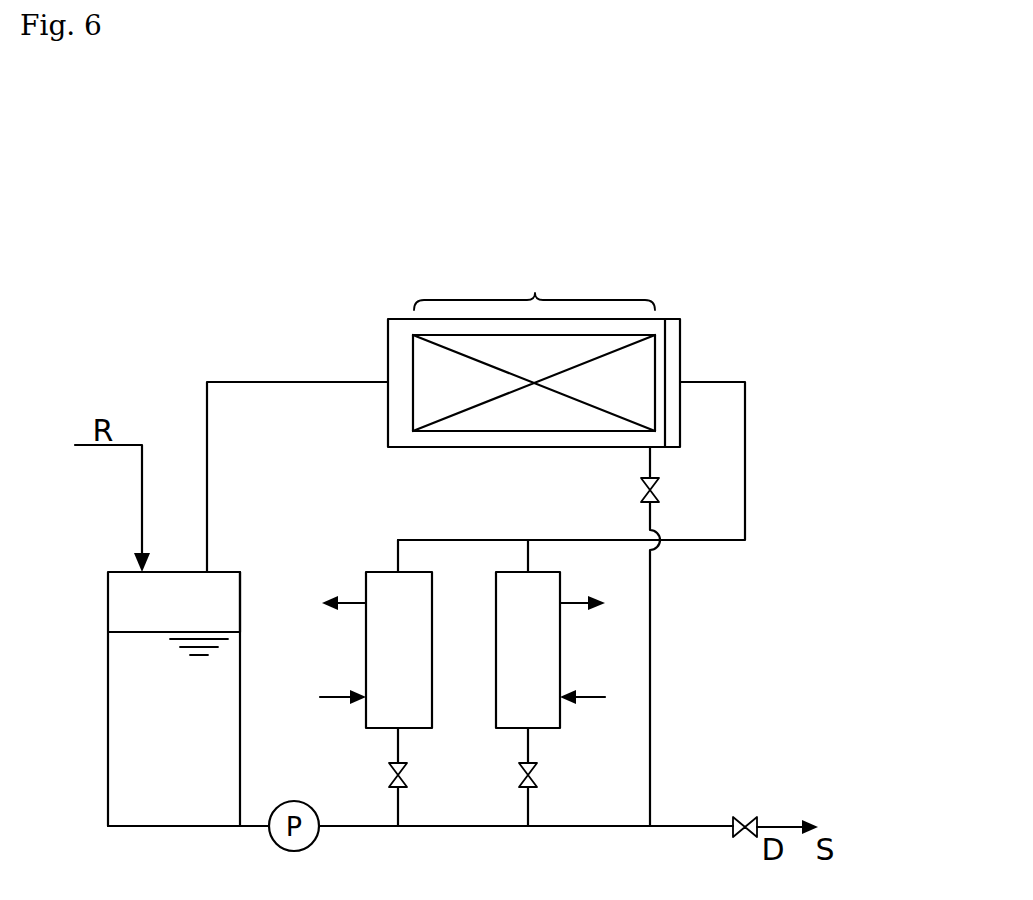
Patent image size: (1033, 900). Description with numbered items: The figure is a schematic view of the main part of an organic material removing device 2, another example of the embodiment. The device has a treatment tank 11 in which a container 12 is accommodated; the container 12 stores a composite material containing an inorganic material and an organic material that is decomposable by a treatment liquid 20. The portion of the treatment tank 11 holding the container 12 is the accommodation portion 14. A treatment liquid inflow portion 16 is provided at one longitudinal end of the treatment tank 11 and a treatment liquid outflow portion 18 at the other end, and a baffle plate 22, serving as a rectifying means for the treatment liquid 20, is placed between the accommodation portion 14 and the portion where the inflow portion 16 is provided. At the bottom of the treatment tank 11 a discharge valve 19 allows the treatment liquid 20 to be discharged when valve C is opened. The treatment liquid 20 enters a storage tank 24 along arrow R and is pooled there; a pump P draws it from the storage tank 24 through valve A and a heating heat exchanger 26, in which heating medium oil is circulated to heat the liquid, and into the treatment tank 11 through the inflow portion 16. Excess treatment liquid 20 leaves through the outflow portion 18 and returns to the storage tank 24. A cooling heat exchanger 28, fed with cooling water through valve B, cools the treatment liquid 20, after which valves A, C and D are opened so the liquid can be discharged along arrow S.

The organic material removing device 2 is at (293, 181).
The treatment tank 11 is at (684, 287).
The container 12 is at (412, 348).
The accommodation portion 14 is at (534, 285).
The treatment liquid inflow portion 16 is at (681, 382).
The treatment liquid outflow portion 18 is at (386, 382).
The discharge valve 19 is at (649, 448).
The treatment liquid 20 is at (148, 660).
The baffle plate 22 is at (671, 328).
The storage tank 24 is at (241, 592).
The heating heat exchanger 26 is at (366, 652).
The cooling heat exchanger 28 is at (560, 652).